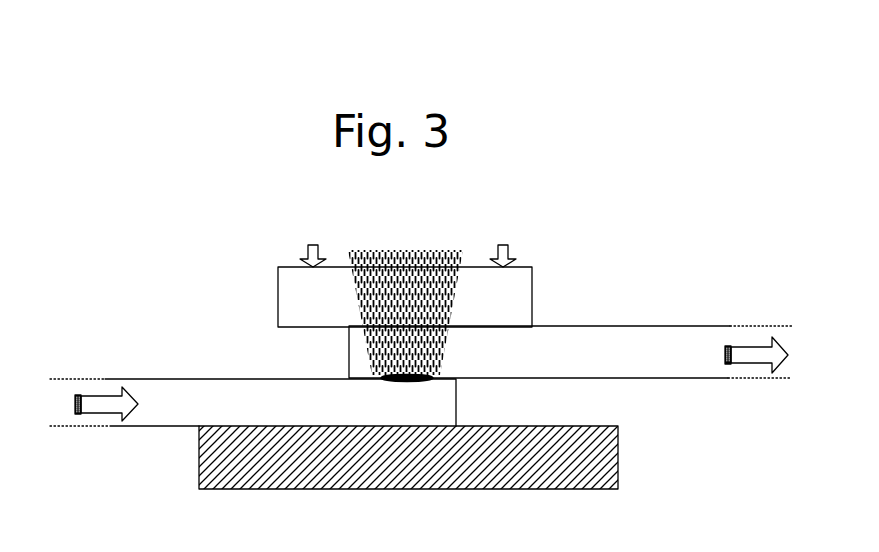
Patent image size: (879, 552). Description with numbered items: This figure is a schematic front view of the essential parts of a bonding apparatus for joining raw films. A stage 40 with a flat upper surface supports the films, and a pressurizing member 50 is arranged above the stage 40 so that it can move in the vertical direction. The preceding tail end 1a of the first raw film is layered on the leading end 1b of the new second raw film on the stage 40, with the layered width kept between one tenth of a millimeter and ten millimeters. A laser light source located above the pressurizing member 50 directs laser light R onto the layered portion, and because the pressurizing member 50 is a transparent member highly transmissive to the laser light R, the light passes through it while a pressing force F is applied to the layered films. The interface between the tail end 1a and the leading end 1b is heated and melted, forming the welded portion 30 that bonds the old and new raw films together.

The pressurizing member 50 is at (524, 266).
The tail end of the first raw film 1a is at (599, 314).
The leading end of the second raw film 1b is at (196, 364).
The welded portion 30 is at (368, 370).
The stage 40 is at (603, 425).
The laser light R is at (350, 293).
The pressing force F is at (408, 244).